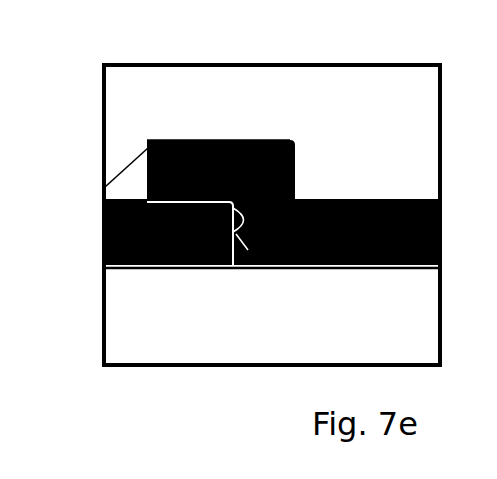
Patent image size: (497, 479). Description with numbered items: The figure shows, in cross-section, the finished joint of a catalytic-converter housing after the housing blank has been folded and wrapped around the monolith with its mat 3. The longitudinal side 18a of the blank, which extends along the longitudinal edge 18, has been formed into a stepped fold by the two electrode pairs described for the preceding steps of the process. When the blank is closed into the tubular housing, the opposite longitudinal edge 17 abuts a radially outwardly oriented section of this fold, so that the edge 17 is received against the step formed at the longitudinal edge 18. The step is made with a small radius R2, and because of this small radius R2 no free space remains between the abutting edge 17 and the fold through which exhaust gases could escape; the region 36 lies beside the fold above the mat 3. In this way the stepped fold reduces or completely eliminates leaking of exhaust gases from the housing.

The longitudinal edge 18 is at (147, 180).
The longitudinal side 18a is at (263, 140).
The spacer region 36 is at (120, 190).
The longitudinal edge 17 is at (232, 208).
The small radius R2 is at (297, 198).
The mat 3 is at (145, 313).